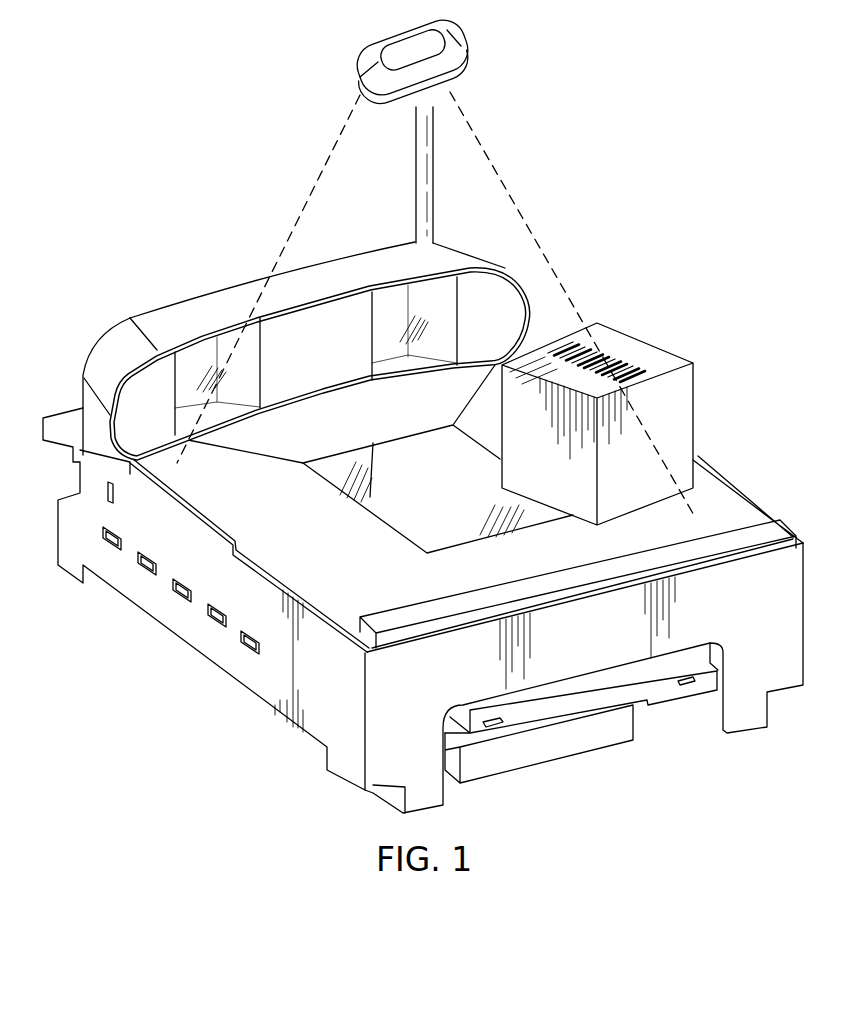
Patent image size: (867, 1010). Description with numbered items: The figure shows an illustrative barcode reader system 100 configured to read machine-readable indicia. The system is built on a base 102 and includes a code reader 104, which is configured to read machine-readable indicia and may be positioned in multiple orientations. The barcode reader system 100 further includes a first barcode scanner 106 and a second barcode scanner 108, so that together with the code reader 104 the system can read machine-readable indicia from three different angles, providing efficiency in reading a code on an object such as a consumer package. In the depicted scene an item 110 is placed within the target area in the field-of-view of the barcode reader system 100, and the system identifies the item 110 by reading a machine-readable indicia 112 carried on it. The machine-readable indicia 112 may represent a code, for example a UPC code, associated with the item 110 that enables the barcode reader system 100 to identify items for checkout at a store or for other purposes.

The barcode reader system 100 is at (703, 80).
The base 102 is at (726, 508).
The code reader 104 is at (469, 50).
The first barcode scanner 106 is at (426, 441).
The second barcode scanner 108 is at (226, 294).
The item 110 is at (626, 360).
The machine-readable indicia 112 is at (686, 418).